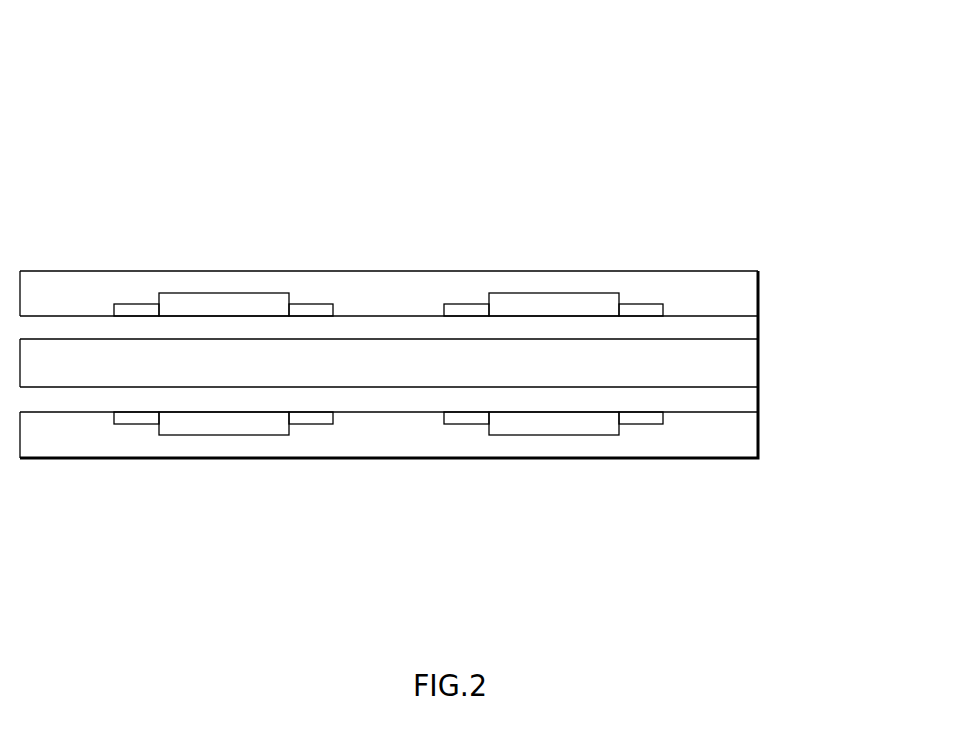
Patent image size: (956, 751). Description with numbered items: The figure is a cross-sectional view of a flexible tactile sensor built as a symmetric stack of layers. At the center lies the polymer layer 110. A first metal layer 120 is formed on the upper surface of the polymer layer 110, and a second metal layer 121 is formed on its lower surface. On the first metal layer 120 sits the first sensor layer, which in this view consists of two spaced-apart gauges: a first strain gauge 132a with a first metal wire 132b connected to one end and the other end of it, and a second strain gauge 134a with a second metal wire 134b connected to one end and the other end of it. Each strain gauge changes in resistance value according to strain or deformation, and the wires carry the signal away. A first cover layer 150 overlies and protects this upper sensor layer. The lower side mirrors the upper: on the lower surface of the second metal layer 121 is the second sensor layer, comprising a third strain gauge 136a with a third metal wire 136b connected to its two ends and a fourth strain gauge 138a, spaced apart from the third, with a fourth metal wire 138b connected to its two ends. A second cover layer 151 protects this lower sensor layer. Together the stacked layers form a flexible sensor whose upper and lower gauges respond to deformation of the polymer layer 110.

The polymer layer 110 is at (760, 367).
The first metal layer 120 is at (760, 329).
The second metal layer 121 is at (760, 398).
The first cover layer 150 is at (760, 293).
The second cover layer 151 is at (760, 434).
The first strain gauge 132a is at (200, 293).
The first metal wire 132b is at (296, 295).
The second strain gauge 134a is at (530, 293).
The second metal wire 134b is at (553, 202).
The third strain gauge 136a is at (199, 436).
The third metal wire 136b is at (223, 526).
The fourth strain gauge 138a is at (529, 436).
The fourth metal wire 138b is at (553, 526).